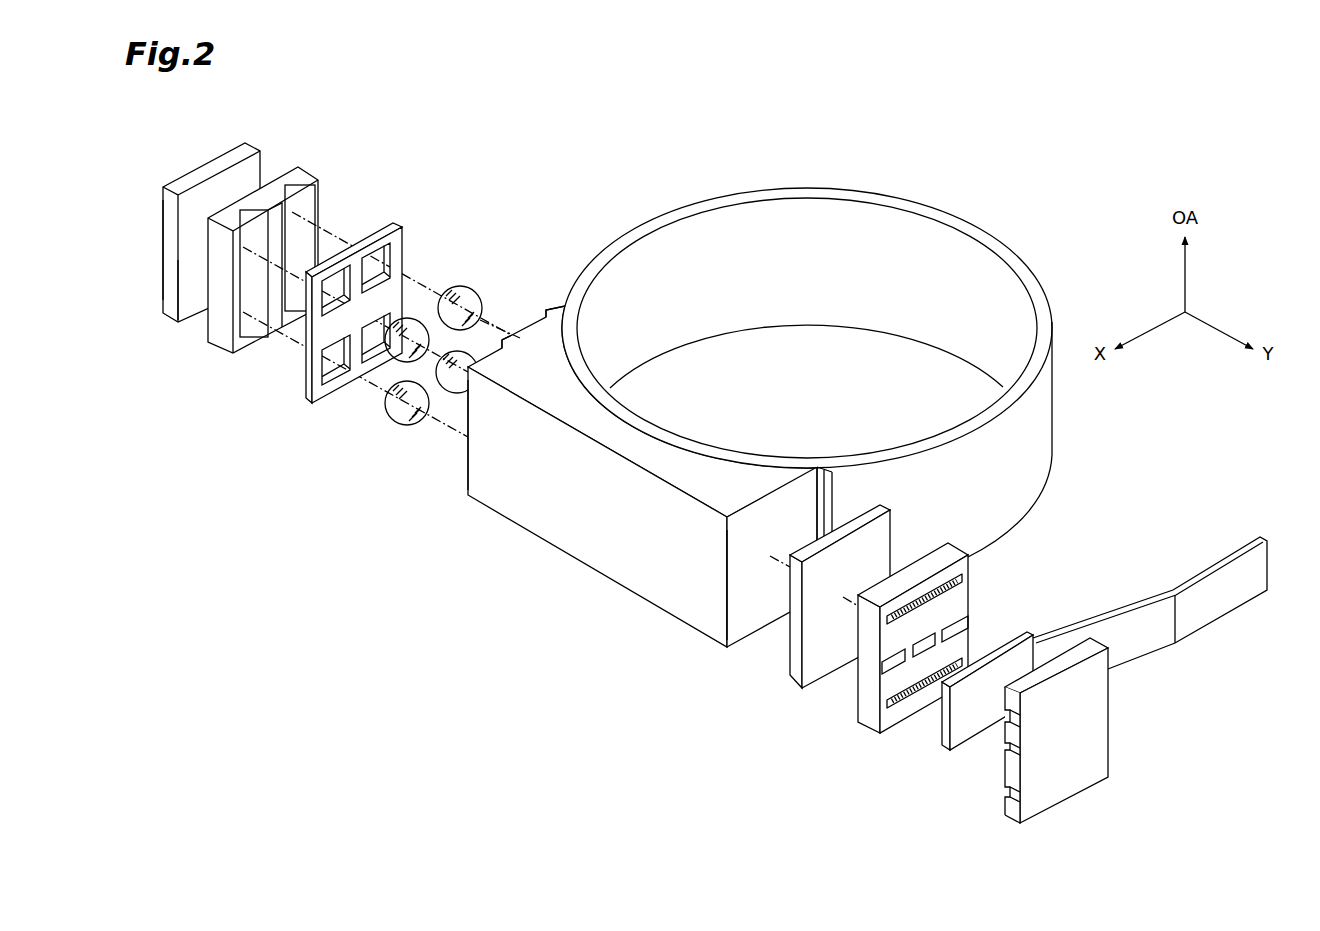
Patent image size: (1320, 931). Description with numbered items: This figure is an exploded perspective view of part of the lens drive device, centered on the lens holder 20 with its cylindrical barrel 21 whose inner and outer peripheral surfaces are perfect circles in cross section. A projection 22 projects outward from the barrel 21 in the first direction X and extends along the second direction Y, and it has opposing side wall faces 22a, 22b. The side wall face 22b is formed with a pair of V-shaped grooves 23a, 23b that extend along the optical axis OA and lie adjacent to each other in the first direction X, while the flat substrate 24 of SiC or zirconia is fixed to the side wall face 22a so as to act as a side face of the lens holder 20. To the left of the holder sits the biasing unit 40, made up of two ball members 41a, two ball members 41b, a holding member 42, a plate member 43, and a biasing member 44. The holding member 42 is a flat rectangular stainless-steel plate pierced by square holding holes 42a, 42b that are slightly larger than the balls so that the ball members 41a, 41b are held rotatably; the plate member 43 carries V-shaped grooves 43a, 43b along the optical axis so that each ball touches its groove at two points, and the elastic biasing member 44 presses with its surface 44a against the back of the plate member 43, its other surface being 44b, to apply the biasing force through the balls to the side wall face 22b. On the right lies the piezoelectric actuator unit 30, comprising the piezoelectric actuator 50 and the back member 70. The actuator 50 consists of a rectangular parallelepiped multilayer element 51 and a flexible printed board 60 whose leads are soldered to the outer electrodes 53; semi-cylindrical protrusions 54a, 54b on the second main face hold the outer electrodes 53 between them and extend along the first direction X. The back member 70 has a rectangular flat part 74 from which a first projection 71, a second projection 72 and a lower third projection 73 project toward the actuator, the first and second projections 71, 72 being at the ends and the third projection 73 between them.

The lens holder 20 is at (741, 435).
The barrel 21 is at (928, 215).
The projection 22 is at (609, 480).
The side wall face 22a is at (743, 627).
The side wall face 22b is at (487, 454).
The groove 23a is at (489, 352).
The groove 23b is at (530, 329).
The substrate 24 is at (794, 672).
The piezoelectric actuator unit 30 is at (741, 475).
The biasing unit 40 is at (338, 298).
The ball member 41a is at (392, 348).
The ball member 41b is at (450, 355).
The holding member 42 is at (334, 318).
The holding hole 42a is at (322, 366).
The holding hole 42b is at (396, 325).
The plate member 43 is at (268, 272).
The groove 43a is at (257, 211).
The groove 43b is at (299, 186).
The biasing member 44 is at (208, 243).
The surface of biasing member 44a is at (190, 307).
The surface of plate 44b is at (161, 237).
The piezoelectric actuator 50 is at (927, 639).
The element 51 is at (922, 610).
The outer electrodes 53 is at (933, 640).
The protrusion 54a is at (960, 579).
The protrusion 54b is at (975, 655).
The flexible printed board 60 is at (897, 777).
The back member 70 is at (1055, 733).
The first projection 71 is at (1002, 718).
The second projection 72 is at (1004, 795).
The third projection 73 is at (1003, 748).
The flat part 74 is at (1030, 733).